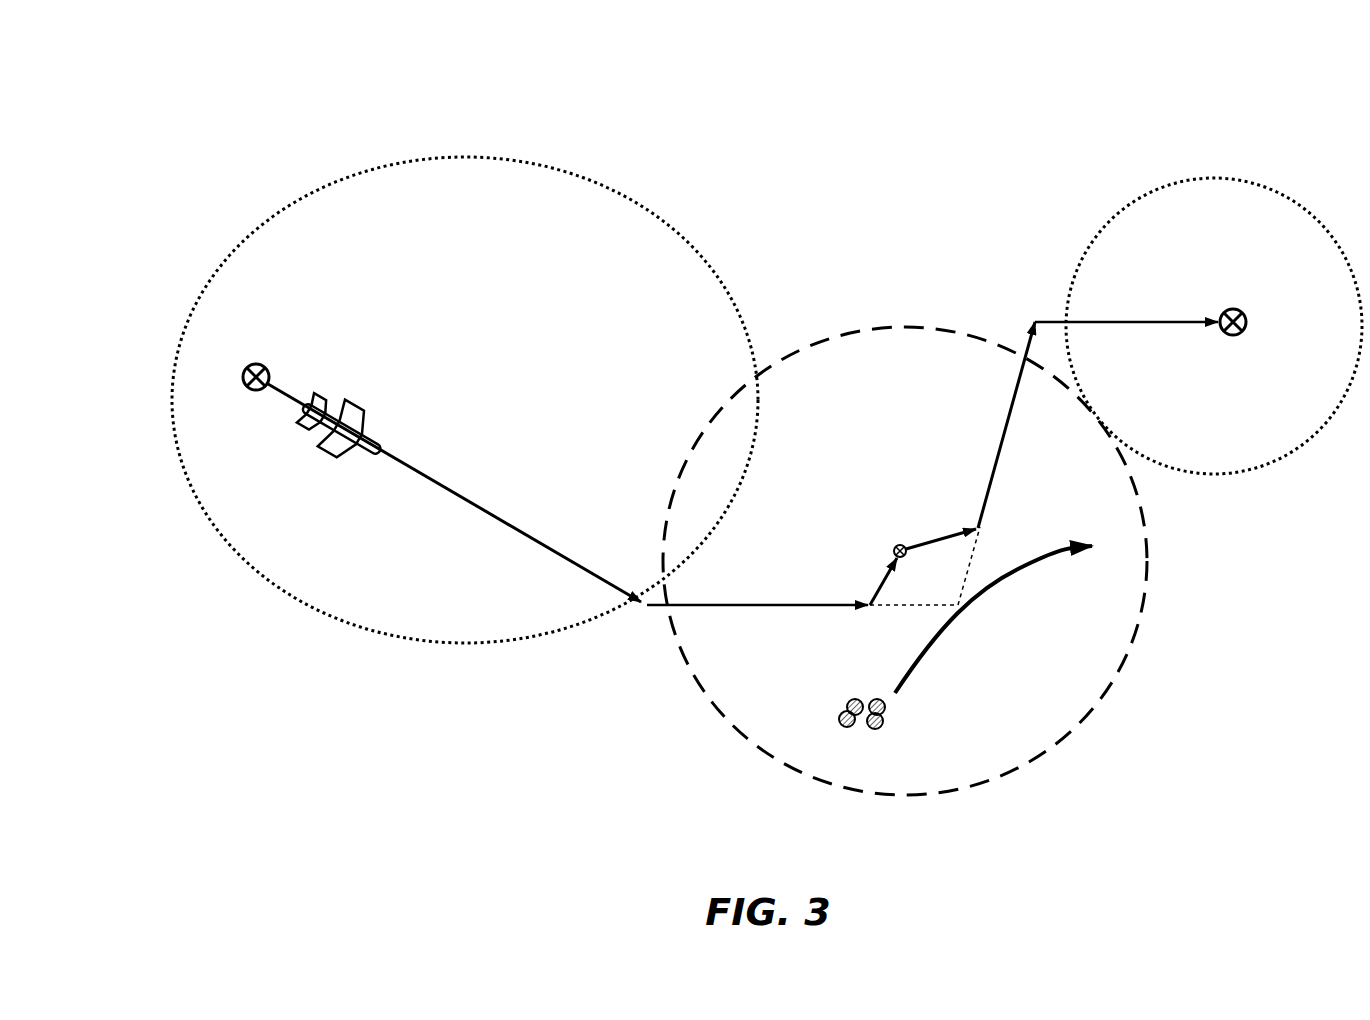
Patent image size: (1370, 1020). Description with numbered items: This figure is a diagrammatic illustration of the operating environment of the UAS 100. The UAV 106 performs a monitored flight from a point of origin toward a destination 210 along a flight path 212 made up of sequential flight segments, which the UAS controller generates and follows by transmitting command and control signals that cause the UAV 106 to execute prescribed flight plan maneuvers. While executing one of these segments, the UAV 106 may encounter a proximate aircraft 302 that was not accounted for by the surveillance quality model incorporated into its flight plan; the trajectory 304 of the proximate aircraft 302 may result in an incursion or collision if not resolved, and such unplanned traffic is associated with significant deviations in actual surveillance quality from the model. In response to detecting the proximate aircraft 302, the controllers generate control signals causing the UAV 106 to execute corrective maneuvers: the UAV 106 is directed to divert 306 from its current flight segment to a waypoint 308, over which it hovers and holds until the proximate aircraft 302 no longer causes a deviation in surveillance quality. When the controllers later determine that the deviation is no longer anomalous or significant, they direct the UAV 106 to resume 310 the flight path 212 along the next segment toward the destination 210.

The UAS 100 is at (126, 79).
The flight path 212 is at (287, 396).
The UAV 106 is at (340, 458).
The destination 210 is at (1222, 312).
The proximate aircraft 302 is at (863, 733).
The trajectory 304 is at (1022, 570).
The divert 306 is at (880, 587).
The waypoint 308 is at (899, 544).
The resume 310 is at (935, 536).